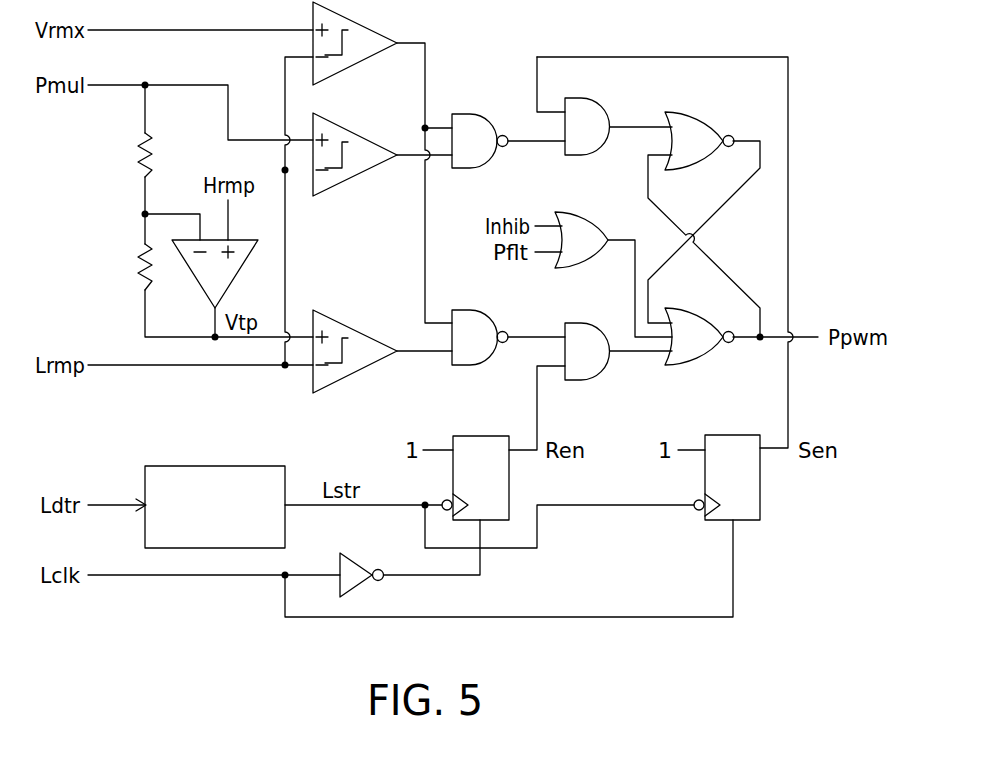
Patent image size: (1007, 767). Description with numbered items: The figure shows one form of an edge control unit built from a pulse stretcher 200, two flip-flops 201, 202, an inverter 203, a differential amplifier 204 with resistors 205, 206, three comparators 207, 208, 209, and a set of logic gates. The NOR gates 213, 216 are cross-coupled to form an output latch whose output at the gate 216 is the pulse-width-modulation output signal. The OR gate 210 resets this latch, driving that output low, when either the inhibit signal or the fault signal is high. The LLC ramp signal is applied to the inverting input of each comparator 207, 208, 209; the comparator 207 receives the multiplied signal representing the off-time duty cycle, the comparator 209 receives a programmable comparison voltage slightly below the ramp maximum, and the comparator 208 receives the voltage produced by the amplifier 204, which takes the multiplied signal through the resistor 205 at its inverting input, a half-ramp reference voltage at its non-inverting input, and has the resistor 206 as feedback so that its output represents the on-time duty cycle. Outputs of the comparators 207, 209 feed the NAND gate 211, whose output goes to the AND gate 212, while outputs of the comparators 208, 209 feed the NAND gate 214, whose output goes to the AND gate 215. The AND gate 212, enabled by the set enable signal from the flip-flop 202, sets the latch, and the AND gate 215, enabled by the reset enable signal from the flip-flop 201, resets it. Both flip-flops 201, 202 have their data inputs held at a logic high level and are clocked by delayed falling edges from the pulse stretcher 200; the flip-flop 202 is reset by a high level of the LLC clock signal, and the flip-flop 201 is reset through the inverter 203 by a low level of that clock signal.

The pulse stretcher 200 is at (173, 472).
The flip-flop 201 is at (482, 443).
The flip-flop 202 is at (737, 440).
The inverter 203 is at (358, 565).
The differential amplifier 204 is at (196, 278).
The resistor 205 is at (133, 157).
The resistor 206 is at (133, 268).
The comparator 207 is at (360, 170).
The comparator 208 is at (360, 365).
The comparator 209 is at (358, 58).
The OR gate 210 is at (575, 213).
The NAND gate 211 is at (474, 120).
The AND gate 212 is at (603, 118).
The NOR gate 213 is at (705, 120).
The NAND gate 214 is at (470, 318).
The AND gate 215 is at (590, 372).
The NOR gate 216 is at (685, 360).